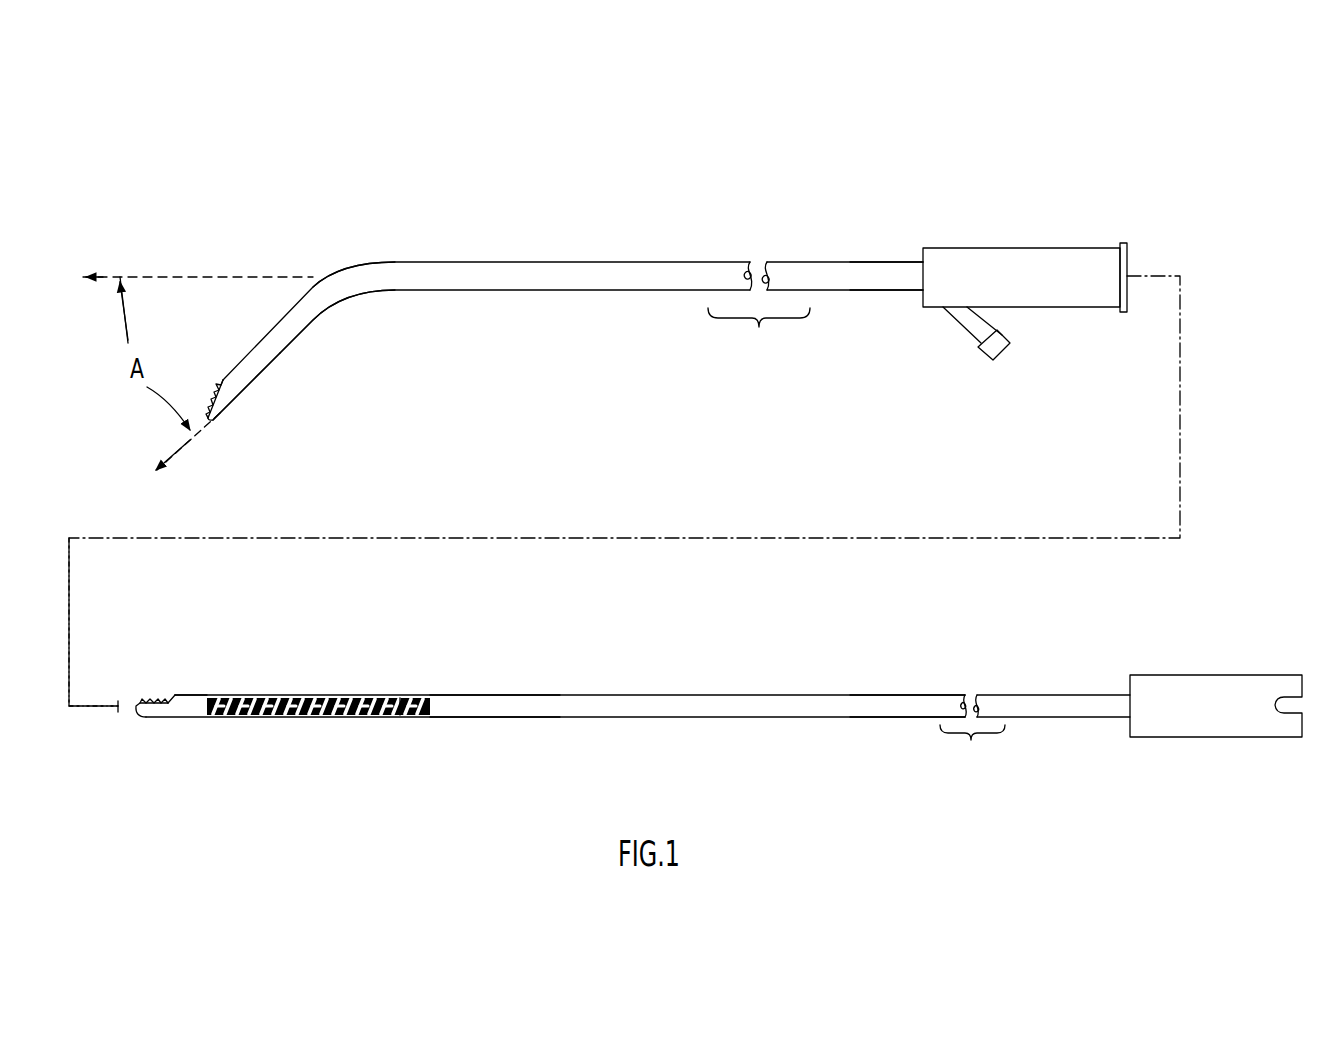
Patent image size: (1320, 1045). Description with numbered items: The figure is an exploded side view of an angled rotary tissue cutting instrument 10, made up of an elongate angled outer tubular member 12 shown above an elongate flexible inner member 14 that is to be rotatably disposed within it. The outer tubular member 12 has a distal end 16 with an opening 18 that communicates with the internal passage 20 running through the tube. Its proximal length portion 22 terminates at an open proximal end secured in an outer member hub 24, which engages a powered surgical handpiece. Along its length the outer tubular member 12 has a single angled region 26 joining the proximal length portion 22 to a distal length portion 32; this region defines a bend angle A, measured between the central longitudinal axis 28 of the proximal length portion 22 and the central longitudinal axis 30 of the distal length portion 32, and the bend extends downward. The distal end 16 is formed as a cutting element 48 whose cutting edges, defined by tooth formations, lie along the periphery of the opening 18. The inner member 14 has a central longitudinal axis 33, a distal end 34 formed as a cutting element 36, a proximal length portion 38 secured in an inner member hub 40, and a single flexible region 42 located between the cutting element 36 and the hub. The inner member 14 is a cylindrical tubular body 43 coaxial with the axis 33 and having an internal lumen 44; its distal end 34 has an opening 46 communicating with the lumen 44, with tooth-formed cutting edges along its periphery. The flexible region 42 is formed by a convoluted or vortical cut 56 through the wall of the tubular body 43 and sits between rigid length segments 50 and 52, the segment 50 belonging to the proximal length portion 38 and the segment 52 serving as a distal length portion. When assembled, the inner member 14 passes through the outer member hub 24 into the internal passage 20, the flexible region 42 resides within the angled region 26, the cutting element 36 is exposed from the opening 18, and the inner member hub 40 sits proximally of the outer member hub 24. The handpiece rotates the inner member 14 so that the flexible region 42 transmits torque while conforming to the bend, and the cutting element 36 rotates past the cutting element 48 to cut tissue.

The angled rotary tissue cutting instrument 10 is at (1236, 279).
The outer tubular member 12 is at (608, 257).
The inner member 14 is at (704, 720).
The distal end 16 is at (233, 397).
The opening 18 is at (212, 393).
The internal passage 20 is at (759, 261).
The proximal length portion 22 is at (860, 272).
The outer member hub 24 is at (993, 258).
The angled region 26 is at (357, 277).
The central longitudinal axis 28 is at (257, 276).
The central longitudinal axis 30 is at (192, 452).
The distal length portion 32 is at (297, 336).
The central longitudinal axis 33 is at (112, 714).
The distal end 34 is at (171, 713).
The cutting element 36 is at (141, 700).
The proximal length portion 38 is at (890, 700).
The inner member hub 40 is at (1217, 688).
The flexible region 42 is at (217, 696).
The tubular body 43 is at (485, 699).
The internal lumen 44 is at (966, 696).
The opening 46 is at (156, 699).
The cutting element 48 is at (217, 377).
The length segment 50 is at (458, 708).
The length segment 52 is at (196, 711).
The convoluted cut 56 is at (403, 692).